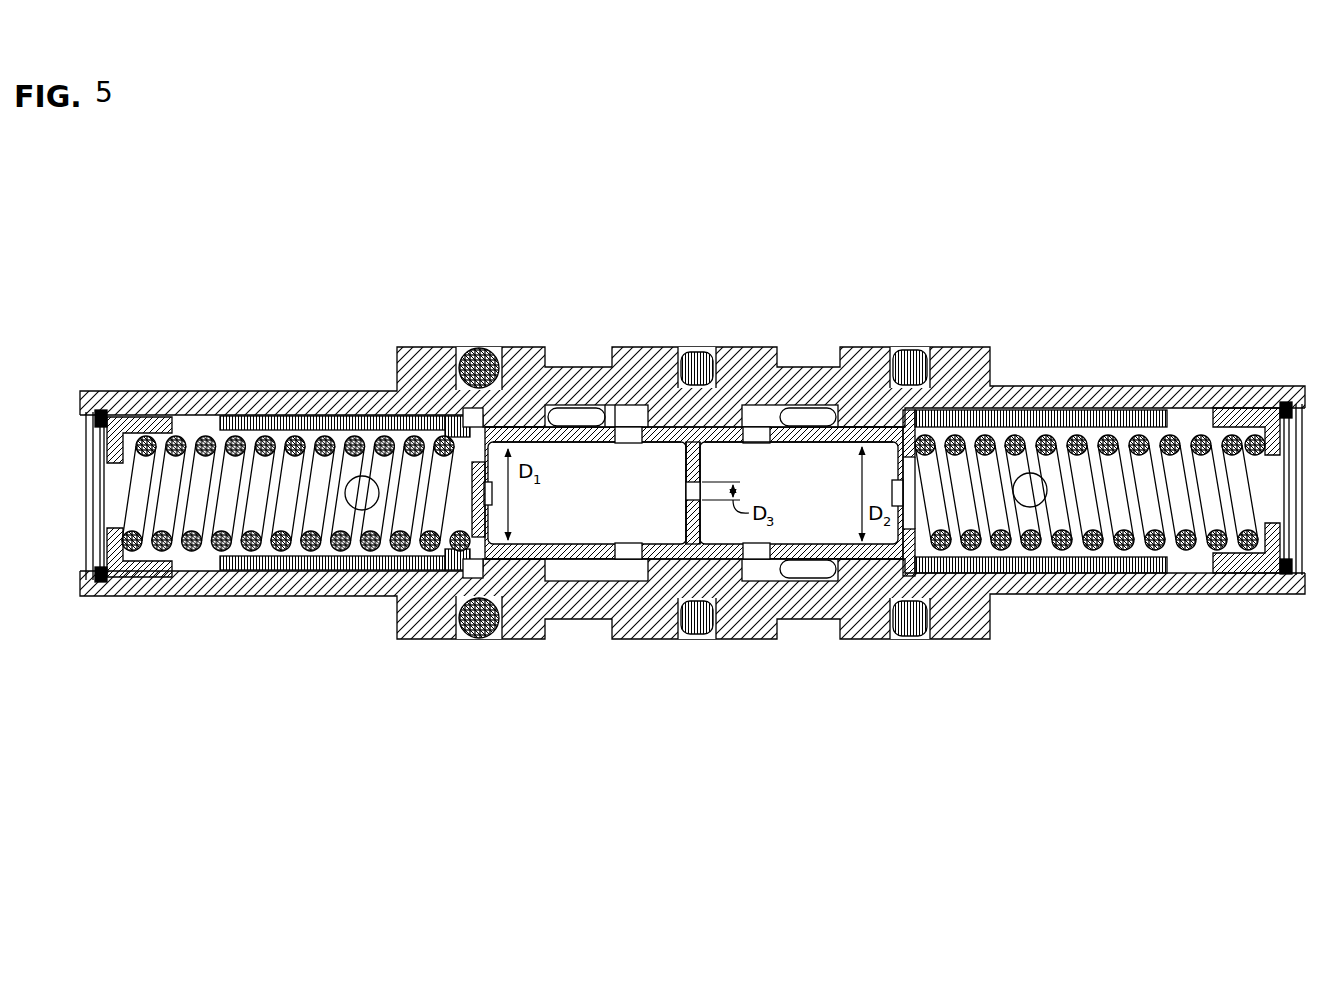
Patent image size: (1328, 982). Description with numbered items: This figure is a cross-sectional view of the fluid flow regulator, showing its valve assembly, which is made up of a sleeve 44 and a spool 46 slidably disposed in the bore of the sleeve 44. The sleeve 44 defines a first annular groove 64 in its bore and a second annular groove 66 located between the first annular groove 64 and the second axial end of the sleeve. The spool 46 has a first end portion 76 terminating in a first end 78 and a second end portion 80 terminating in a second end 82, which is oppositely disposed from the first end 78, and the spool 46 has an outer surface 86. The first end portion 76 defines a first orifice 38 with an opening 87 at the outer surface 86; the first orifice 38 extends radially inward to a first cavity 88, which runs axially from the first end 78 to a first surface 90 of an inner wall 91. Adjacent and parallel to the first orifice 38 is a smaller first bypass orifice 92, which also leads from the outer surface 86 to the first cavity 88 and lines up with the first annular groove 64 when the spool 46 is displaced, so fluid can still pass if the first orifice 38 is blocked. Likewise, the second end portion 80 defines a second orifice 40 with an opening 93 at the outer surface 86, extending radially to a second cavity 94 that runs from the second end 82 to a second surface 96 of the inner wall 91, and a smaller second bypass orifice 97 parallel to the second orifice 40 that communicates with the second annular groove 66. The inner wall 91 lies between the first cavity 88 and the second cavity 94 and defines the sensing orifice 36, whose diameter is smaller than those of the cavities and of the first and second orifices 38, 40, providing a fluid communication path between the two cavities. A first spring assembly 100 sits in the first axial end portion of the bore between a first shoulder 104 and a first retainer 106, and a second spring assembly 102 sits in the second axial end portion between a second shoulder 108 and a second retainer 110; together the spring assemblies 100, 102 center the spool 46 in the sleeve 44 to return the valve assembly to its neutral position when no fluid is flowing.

The sleeve 44 is at (432, 338).
The first shoulder 104 is at (480, 414).
The spool 46 is at (549, 419).
The first annular groove 64 is at (608, 412).
The opening of the first orifice 87 is at (614, 428).
The outer surface 86 is at (703, 427).
The second annular groove 66 is at (772, 412).
The second end 82 is at (928, 417).
The second retainer 110 is at (1303, 397).
The first retainer 106 is at (103, 570).
The first spring assembly 100 is at (290, 588).
The second spring assembly 102 is at (1095, 575).
The first end 78 is at (485, 548).
The first end portion 76 is at (524, 567).
The second end portion 80 is at (870, 565).
The opening of the second orifice 93 is at (758, 558).
The second shoulder 108 is at (903, 563).
The first cavity 88 is at (570, 515).
The second cavity 94 is at (840, 507).
The first bypass orifice 92 is at (589, 441).
The second bypass orifice 97 is at (782, 429).
The first orifice 38 is at (633, 442).
The second orifice 40 is at (764, 548).
The sensing orifice 36 is at (688, 491).
The first surface 90 is at (684, 518).
The inner wall 91 is at (707, 473).
The second surface 96 is at (702, 524).